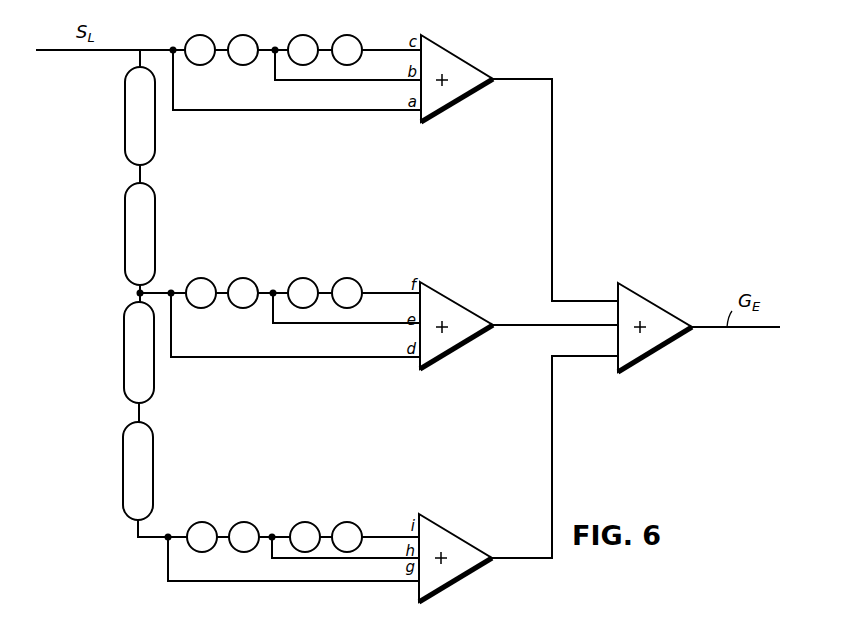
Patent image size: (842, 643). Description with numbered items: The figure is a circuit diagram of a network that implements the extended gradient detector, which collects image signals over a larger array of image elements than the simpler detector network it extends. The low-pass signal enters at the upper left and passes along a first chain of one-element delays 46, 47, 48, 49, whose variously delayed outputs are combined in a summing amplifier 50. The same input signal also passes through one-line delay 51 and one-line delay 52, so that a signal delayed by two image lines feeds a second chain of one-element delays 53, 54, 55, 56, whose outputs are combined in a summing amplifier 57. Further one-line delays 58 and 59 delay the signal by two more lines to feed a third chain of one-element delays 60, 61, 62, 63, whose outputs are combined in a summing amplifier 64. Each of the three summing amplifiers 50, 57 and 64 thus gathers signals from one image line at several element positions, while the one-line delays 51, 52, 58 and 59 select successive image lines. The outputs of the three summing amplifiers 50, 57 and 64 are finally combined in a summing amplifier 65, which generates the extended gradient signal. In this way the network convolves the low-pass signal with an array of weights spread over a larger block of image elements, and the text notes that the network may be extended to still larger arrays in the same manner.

The one-element delay 46 is at (200, 35).
The one-element delay 47 is at (243, 35).
The one-element delay 48 is at (303, 35).
The one-element delay 49 is at (348, 35).
The summing amplifier 50 is at (466, 57).
The one-line delay 51 is at (125, 125).
The one-line delay 52 is at (125, 232).
The one-element delay 53 is at (201, 278).
The one-element delay 54 is at (243, 278).
The one-element delay 55 is at (303, 278).
The one-element delay 56 is at (348, 278).
The summing amplifier 57 is at (462, 309).
The one-line delay 58 is at (124, 358).
The one-line delay 59 is at (123, 475).
The one-element delay 60 is at (202, 522).
The one-element delay 61 is at (244, 522).
The one-element delay 62 is at (305, 522).
The one-element delay 63 is at (347, 522).
The summing amplifier 64 is at (455, 530).
The summing amplifier 65 is at (656, 304).